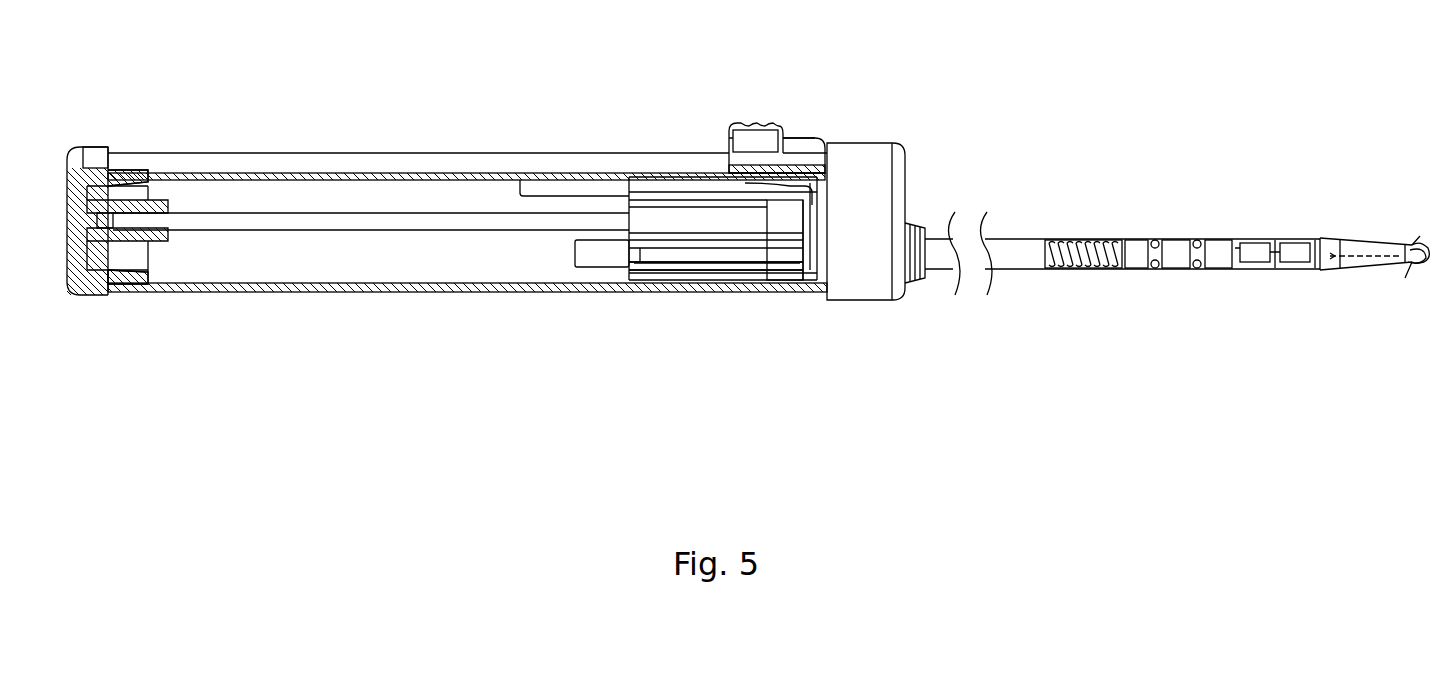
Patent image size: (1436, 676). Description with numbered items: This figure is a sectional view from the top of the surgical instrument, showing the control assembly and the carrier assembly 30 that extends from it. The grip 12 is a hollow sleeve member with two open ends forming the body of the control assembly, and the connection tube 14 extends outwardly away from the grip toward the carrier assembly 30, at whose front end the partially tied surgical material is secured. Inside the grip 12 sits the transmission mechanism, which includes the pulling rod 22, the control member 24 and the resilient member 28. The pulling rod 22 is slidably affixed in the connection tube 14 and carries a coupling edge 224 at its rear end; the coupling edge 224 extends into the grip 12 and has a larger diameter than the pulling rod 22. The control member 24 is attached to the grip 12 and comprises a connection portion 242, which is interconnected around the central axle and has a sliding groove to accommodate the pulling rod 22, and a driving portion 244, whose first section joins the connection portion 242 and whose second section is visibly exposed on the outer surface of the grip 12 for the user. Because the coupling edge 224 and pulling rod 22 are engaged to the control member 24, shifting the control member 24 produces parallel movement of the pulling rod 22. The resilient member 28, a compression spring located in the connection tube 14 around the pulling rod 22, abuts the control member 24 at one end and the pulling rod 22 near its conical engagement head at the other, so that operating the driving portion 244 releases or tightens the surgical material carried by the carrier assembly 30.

The grip 12 is at (496, 221).
The connection tube 14 is at (940, 245).
The pulling rod 22 is at (722, 255).
The control member 24 is at (659, 182).
The resilient member 28 is at (1079, 238).
The carrier assembly 30 is at (1369, 243).
The coupling edge 224 is at (605, 260).
The connection portion 242 is at (657, 222).
The driving portion 244 is at (752, 122).